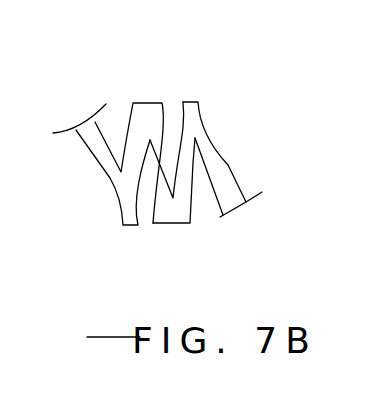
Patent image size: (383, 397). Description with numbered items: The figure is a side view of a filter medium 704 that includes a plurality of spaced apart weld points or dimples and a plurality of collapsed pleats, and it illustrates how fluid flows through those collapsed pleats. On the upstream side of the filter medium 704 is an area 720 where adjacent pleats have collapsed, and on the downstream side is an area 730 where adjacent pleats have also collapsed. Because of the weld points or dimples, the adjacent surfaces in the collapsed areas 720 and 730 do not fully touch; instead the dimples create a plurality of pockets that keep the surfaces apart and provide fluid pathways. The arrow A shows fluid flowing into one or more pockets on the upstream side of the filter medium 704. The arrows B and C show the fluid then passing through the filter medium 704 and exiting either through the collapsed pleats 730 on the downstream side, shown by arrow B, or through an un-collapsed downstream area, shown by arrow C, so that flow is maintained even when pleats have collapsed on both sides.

The filter medium 704 is at (224, 174).
The collapsed area on upstream side 720 is at (164, 238).
The collapsed area on downstream side 730 is at (195, 88).
The arrow A is at (139, 210).
The arrow B is at (171, 114).
The arrow C is at (128, 128).